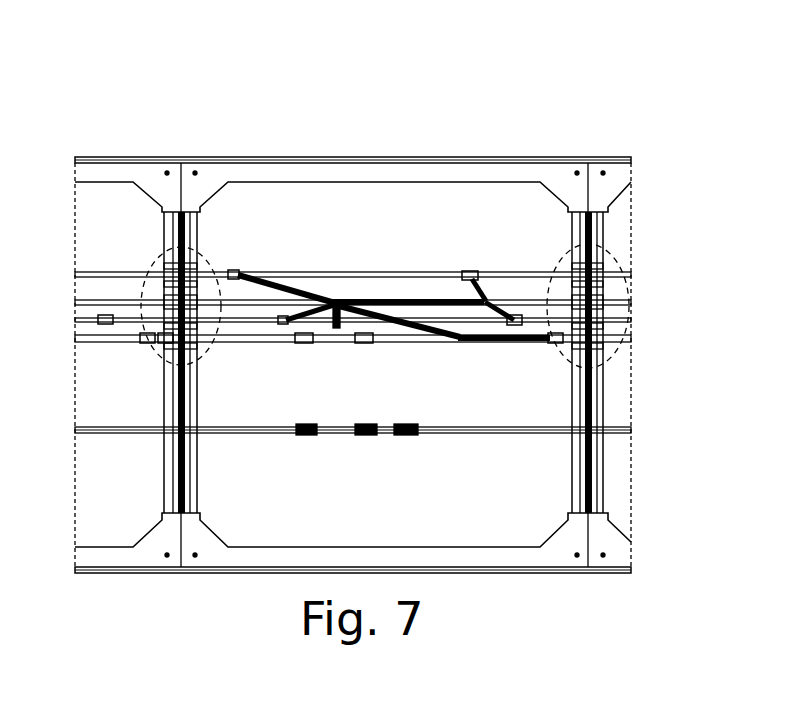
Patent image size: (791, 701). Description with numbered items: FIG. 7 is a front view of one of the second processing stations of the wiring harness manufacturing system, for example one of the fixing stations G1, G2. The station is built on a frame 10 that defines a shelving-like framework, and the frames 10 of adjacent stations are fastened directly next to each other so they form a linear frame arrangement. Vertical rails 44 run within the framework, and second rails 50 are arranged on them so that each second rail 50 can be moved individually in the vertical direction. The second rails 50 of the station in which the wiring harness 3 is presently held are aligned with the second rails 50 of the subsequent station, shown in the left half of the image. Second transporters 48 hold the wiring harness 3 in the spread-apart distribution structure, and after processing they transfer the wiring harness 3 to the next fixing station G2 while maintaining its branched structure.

The frame 10 is at (103, 176).
The vertical rail 44 is at (194, 463).
The second transporter 48 is at (243, 269).
The second rail 50 is at (407, 300).
The wiring harness 3 is at (390, 330).
The fixing station substation G1 is at (559, 142).
The fixing station substation G2 is at (220, 313).